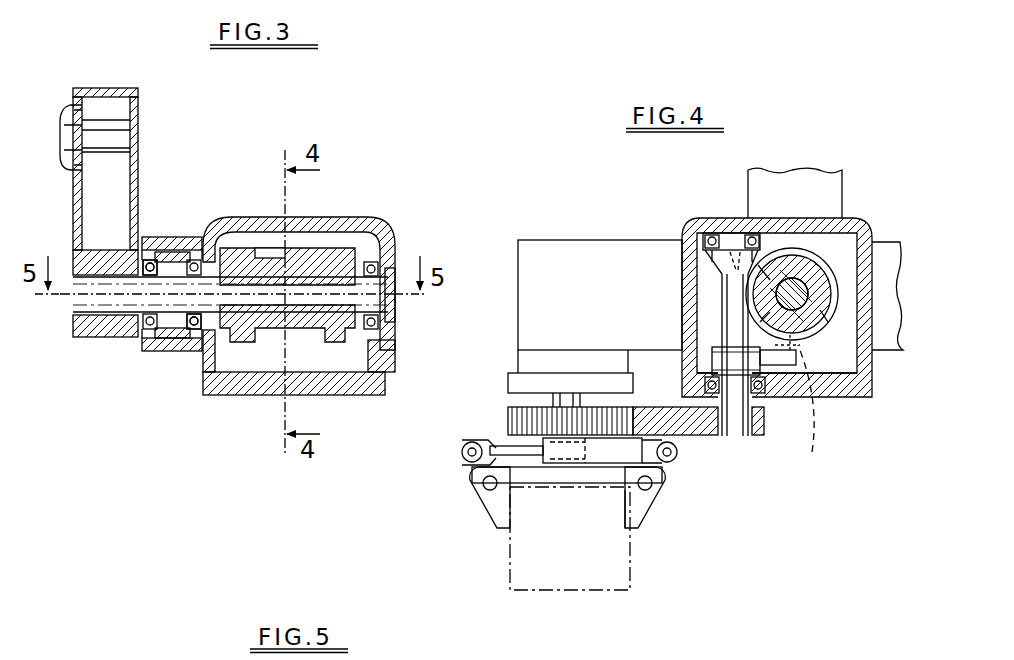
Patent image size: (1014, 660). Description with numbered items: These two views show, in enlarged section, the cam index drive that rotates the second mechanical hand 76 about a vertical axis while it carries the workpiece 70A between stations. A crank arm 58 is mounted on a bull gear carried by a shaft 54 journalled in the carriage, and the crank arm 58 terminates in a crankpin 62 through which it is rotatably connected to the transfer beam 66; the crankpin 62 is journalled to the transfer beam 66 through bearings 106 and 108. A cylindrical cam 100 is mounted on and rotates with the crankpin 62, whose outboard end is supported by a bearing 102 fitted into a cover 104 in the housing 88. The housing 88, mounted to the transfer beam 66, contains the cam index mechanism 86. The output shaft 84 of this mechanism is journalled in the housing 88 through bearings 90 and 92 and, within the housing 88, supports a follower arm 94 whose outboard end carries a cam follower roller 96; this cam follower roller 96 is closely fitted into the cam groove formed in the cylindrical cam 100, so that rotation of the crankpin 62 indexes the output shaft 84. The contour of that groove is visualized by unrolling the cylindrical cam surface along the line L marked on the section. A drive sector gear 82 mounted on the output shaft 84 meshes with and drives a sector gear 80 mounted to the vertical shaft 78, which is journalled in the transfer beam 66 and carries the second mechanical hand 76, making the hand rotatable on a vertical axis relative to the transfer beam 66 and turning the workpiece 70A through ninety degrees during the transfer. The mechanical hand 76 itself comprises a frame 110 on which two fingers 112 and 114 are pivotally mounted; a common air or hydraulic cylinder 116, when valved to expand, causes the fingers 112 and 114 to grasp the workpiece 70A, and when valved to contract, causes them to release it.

In FIG. 3, the shaft 54 is at (70, 116).
In FIG. 3, the crank arm 58 is at (75, 199).
In FIG. 4, the crank arm 58 is at (781, 182).
In FIG. 3, the crankpin 62 is at (73, 306).
In FIG. 4, the crankpin 62 is at (792, 286).
In FIG. 3, the transfer beam 66 is at (145, 350).
In FIG. 4, the transfer beam 66 is at (600, 229).
In FIG. 4, the workpiece 70A is at (612, 590).
In FIG. 4, the second mechanical hand 76 is at (470, 484).
In FIG. 4, the vertical shaft 78 is at (548, 396).
In FIG. 4, the sector gear 80 is at (510, 420).
In FIG. 4, the drive sector gear 82 is at (698, 440).
In FIG. 4, the output shaft 84 is at (733, 440).
In FIG. 4, the cam index mechanism 86 is at (826, 216).
In FIG. 3, the housing 88 is at (375, 226).
In FIG. 4, the housing 88 is at (812, 247).
In FIG. 4, the bearing 90 is at (706, 240).
In FIG. 4, the bearing 92 is at (708, 381).
In FIG. 4, the follower arm 94 is at (790, 366).
In FIG. 4, the cam follower roller 96 is at (845, 398).
In FIG. 3, the cylindrical cam 100 is at (328, 250).
In FIG. 4, the cylindrical cam 100 is at (846, 262).
In FIG. 3, the bearing 102 is at (372, 278).
In FIG. 3, the cover 104 is at (394, 332).
In FIG. 3, the bearing 106 is at (152, 268).
In FIG. 3, the bearing 108 is at (190, 334).
In FIG. 4, the frame 110 is at (666, 492).
In FIG. 4, the finger 112 is at (640, 518).
In FIG. 4, the finger 114 is at (500, 506).
In FIG. 4, the cylinder 116 is at (540, 452).
In FIG. 4, the line L is at (806, 411).